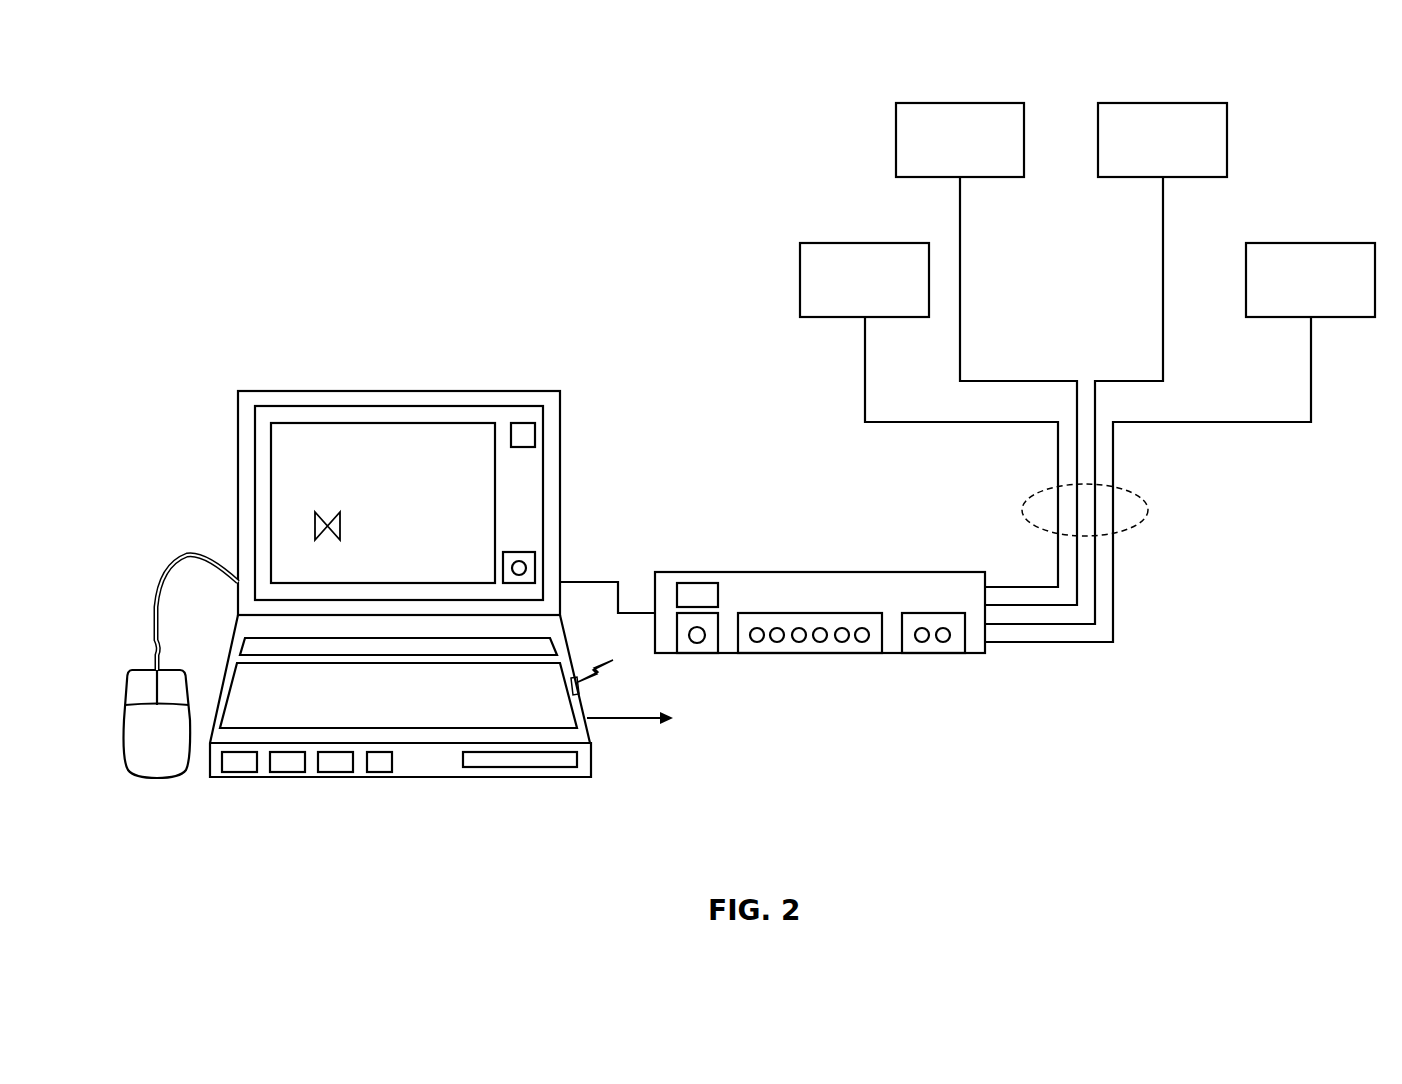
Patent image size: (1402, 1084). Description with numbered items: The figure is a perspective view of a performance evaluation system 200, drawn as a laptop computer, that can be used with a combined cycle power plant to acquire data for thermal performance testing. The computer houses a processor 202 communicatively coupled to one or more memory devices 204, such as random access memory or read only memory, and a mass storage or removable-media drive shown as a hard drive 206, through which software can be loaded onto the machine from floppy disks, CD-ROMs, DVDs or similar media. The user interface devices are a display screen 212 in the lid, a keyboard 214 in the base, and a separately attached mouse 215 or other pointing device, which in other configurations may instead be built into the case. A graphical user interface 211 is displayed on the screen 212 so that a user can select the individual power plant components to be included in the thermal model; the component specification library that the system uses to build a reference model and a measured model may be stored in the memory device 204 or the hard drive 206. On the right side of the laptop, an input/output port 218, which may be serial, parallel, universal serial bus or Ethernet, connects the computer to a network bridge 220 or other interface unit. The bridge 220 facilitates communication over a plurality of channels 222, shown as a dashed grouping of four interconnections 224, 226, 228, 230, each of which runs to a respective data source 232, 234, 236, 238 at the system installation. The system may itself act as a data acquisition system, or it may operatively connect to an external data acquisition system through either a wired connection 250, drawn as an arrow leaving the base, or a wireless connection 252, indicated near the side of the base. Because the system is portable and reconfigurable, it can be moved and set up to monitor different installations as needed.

The performance evaluation system 200 is at (535, 387).
The processor 202 is at (287, 767).
The memory device 204 is at (238, 767).
The hard drive 206 is at (565, 765).
The graphical user interface 211 is at (327, 527).
The display screen 212 is at (423, 468).
The keyboard 214 is at (550, 712).
The mouse 215 is at (123, 700).
The input/output port 218 is at (607, 582).
The network bridge 220 is at (812, 572).
The channels 222 is at (1147, 508).
The interconnection 224 is at (863, 368).
The interconnection 226 is at (962, 337).
The interconnection 228 is at (1163, 223).
The interconnection 230 is at (1308, 369).
The data source 232 is at (870, 242).
The data source 234 is at (967, 103).
The data source 236 is at (1168, 103).
The data source 238 is at (1320, 243).
The wired connection 250 is at (617, 717).
The wireless connection 252 is at (580, 677).